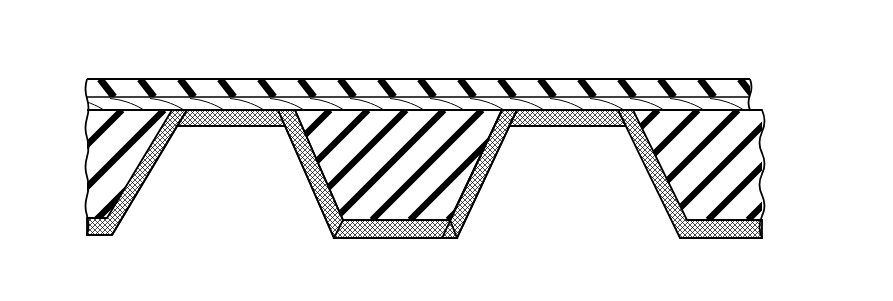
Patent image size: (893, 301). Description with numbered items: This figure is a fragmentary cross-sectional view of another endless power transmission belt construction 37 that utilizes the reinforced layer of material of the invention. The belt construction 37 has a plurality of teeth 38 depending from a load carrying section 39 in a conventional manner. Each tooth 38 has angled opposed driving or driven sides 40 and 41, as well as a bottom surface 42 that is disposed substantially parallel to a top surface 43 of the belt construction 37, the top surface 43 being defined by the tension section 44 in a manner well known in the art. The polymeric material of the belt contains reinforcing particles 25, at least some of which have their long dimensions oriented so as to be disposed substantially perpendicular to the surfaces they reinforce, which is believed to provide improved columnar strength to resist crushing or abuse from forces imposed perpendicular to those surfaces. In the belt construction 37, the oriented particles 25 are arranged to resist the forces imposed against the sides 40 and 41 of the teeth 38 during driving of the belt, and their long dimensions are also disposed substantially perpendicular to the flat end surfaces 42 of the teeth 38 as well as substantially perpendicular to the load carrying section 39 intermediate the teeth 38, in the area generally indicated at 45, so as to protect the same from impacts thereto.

The endless power transmission belt construction 37 is at (454, 68).
The load carrying section 39 is at (372, 103).
The top surface 43 is at (525, 82).
The tension section 44 is at (625, 88).
The teeth 38 is at (345, 186).
The driving or driven side 40 is at (305, 167).
The driving or driven side 41 is at (488, 170).
The bottom surface 42 is at (362, 240).
The reinforcing particles 25 is at (458, 225).
The area intermediate the teeth 45 is at (213, 165).